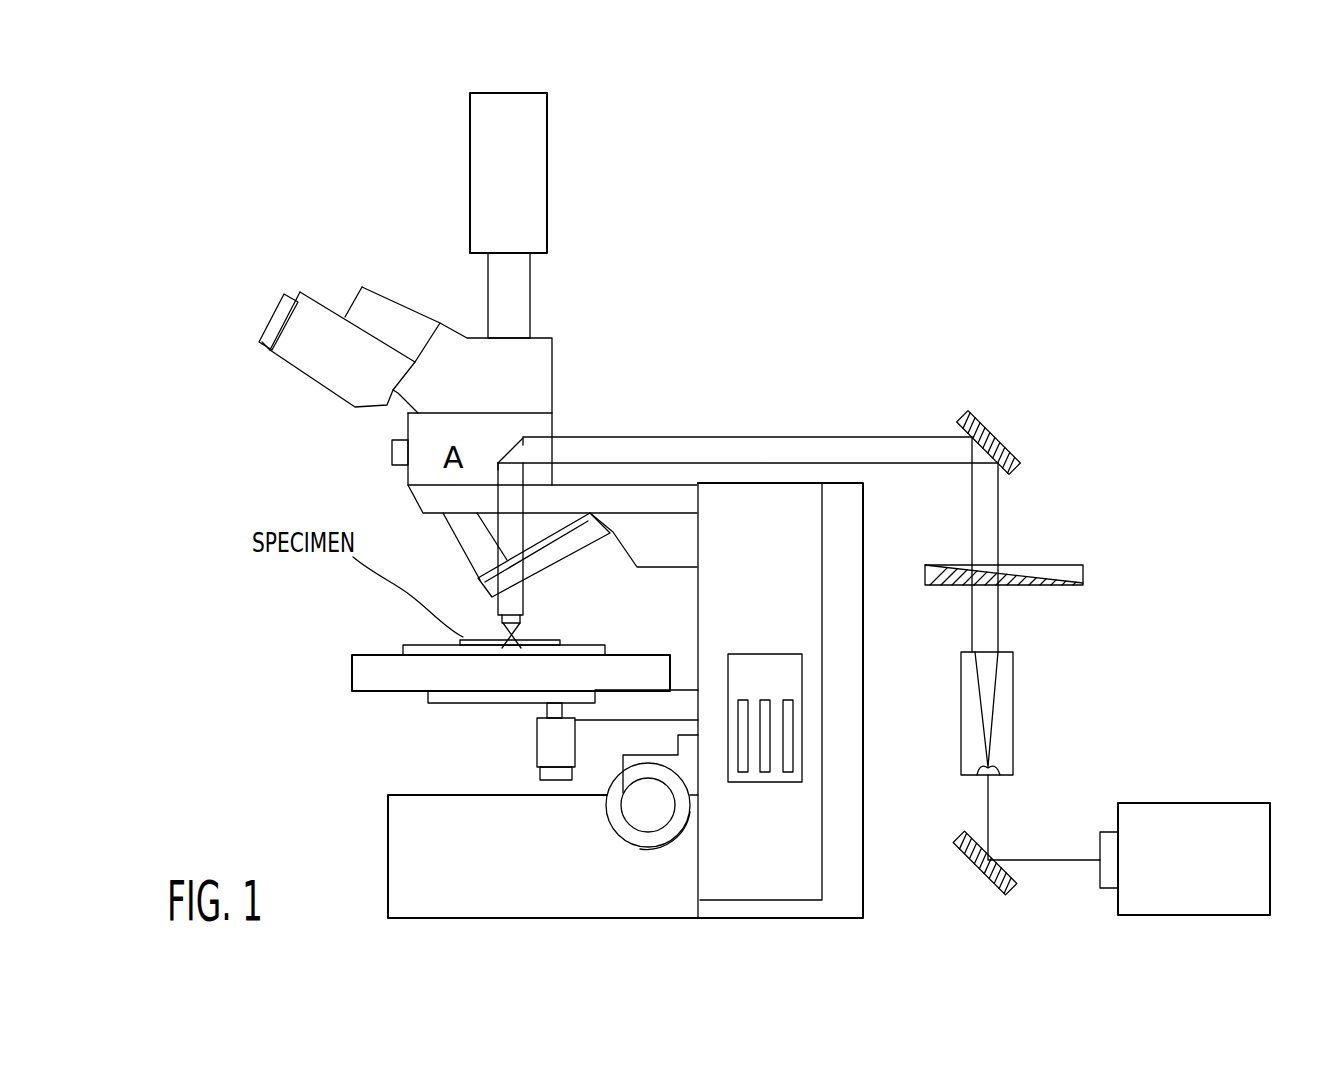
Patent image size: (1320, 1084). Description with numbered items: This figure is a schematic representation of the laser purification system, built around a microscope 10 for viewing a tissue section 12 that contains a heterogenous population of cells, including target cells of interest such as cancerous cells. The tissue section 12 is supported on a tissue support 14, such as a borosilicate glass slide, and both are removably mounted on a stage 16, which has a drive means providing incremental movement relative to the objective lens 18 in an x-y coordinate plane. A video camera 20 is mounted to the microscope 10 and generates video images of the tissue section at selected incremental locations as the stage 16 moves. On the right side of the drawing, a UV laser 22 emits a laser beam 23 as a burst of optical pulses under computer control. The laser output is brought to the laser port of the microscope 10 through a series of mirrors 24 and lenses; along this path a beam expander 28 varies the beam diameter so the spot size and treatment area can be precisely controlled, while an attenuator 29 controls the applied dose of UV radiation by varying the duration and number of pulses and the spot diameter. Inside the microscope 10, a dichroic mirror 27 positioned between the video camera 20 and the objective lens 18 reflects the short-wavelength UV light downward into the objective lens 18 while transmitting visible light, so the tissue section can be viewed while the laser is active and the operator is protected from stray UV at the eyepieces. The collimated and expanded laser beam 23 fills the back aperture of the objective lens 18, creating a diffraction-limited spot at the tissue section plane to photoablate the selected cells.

The microscope 10 is at (389, 903).
The tissue section 12 is at (460, 641).
The tissue support 14 is at (606, 647).
The stage 16 is at (352, 688).
The objective lens 18 is at (528, 613).
The video camera 20 is at (471, 212).
The UV laser 22 is at (1160, 803).
The laser beam 23 is at (990, 818).
The mirrors 24 is at (997, 437).
The dichroic mirror 27 is at (497, 462).
The beam expander 28 is at (960, 738).
The attenuator 29 is at (1085, 572).